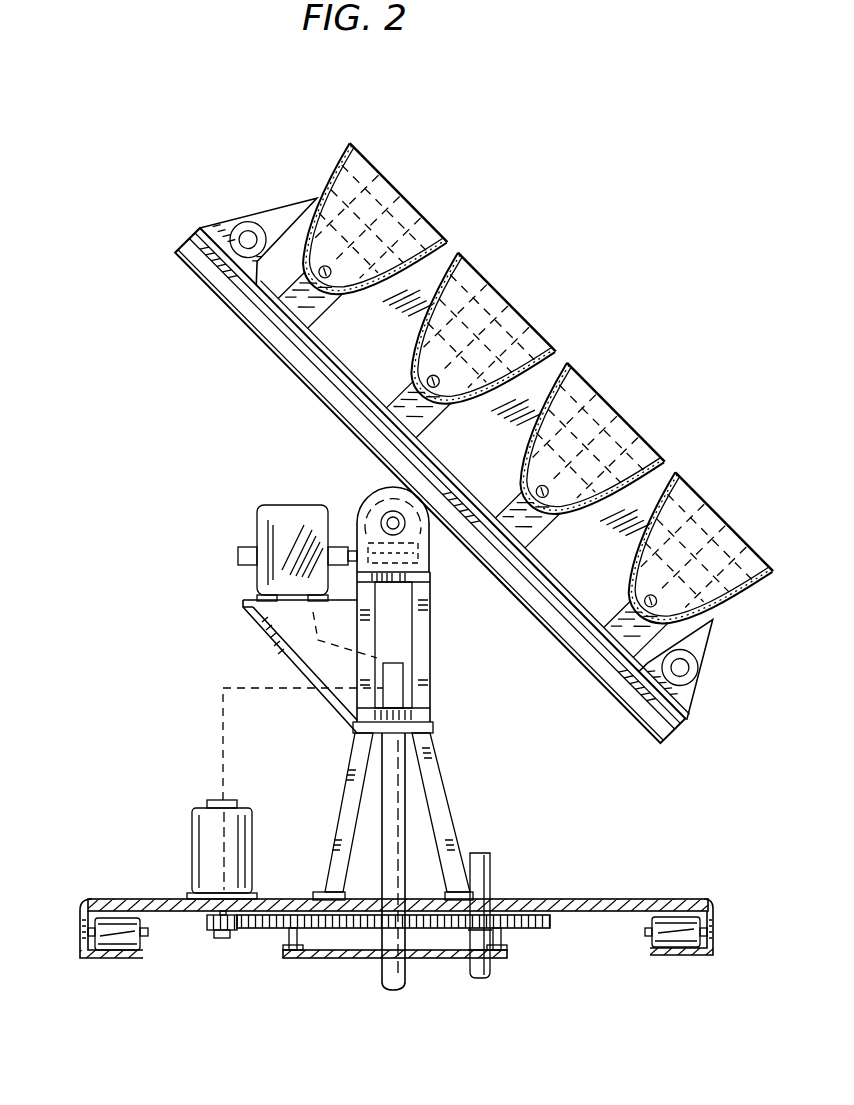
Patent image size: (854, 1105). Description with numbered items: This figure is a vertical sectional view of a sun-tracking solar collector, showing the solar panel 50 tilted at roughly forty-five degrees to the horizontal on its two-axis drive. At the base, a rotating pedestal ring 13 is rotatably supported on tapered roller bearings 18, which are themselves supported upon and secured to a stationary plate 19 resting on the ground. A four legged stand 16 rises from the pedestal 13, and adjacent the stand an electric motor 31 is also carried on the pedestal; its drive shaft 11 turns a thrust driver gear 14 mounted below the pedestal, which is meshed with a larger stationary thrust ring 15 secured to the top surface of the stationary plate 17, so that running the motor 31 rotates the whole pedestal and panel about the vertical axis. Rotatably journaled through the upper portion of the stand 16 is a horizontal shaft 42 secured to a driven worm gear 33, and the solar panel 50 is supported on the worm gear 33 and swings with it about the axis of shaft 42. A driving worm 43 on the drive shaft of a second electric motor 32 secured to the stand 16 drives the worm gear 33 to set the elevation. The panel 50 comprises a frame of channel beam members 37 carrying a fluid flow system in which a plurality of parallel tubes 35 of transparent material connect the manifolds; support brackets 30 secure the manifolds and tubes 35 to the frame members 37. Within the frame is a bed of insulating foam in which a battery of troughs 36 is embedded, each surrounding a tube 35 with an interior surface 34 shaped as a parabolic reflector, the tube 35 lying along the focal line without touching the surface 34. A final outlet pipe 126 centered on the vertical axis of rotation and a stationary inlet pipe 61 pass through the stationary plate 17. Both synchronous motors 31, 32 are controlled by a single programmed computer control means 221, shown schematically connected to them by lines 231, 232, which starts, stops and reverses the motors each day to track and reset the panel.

The drive shaft 11 is at (170, 900).
The rotating pedestal ring 13 is at (108, 898).
The thrust driver gear 14 is at (207, 922).
The stationary thrust ring 15 is at (293, 920).
The four legged stand 16 is at (447, 807).
The stationary plate 17 is at (503, 953).
The tapered roller bearings 18 is at (128, 947).
The stationary plate 19 is at (708, 957).
The support brackets 30 is at (274, 212).
The electric motor 31 is at (192, 815).
The electric motor 32 is at (262, 512).
The driven worm gear 33 is at (362, 502).
The parabolic reflector surfaces 34 is at (347, 293).
The parallel tubes 35 is at (328, 270).
The troughs 36 is at (250, 318).
The channel beam members 37 is at (177, 255).
The horizontal shaft 42 is at (428, 565).
The driving worm 43 is at (393, 583).
The solar panel 50 is at (216, 206).
The stationary inlet pipe 61 is at (490, 872).
The final outlet pipe 126 is at (405, 843).
The computer control means 221 is at (397, 662).
The line 231 is at (303, 744).
The line 232 is at (345, 635).